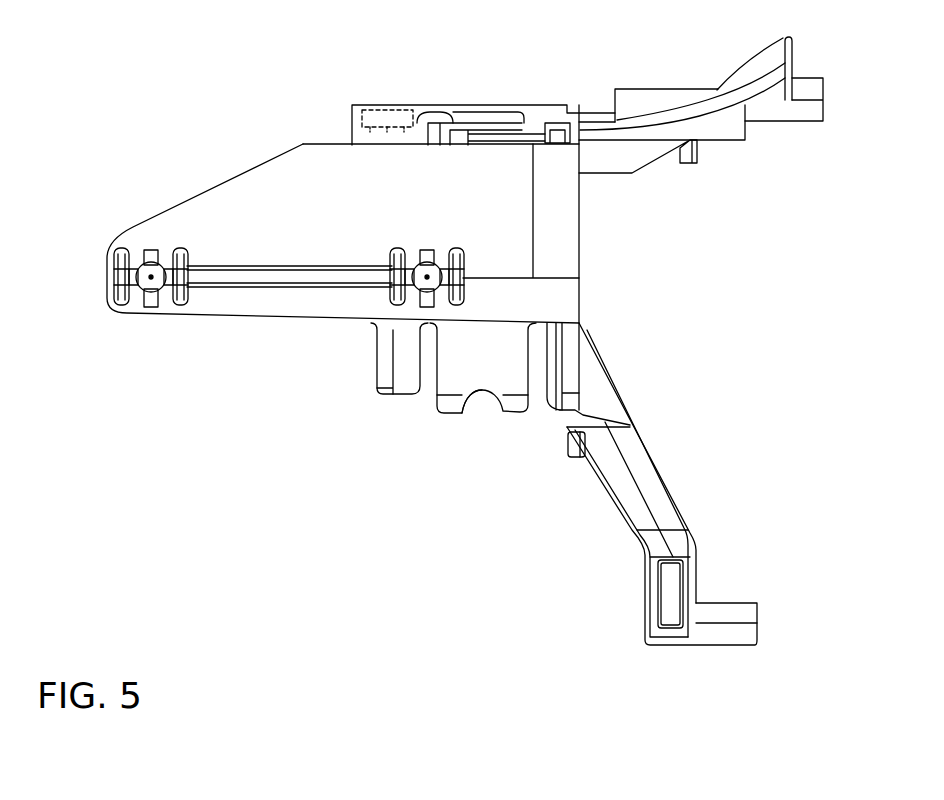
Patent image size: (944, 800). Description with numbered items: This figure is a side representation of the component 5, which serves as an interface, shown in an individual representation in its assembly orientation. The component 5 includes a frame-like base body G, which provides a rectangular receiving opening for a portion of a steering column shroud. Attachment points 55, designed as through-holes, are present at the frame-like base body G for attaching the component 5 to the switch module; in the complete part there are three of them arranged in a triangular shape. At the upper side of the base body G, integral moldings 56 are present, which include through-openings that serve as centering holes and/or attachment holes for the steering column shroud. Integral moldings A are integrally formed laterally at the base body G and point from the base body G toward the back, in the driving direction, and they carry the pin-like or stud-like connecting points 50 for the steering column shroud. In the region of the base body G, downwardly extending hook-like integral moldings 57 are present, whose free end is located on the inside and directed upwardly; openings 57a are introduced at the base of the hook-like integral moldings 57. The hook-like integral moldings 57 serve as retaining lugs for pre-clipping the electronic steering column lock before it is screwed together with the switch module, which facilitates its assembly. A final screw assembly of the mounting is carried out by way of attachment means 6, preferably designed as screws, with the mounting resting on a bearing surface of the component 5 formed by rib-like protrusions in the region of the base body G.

The component 5 is at (233, 113).
The attachment means 6 is at (392, 116).
The connecting points 50 is at (427, 277).
The attachment points 55 is at (757, 624).
The integral moldings 56 is at (645, 107).
The hook-like integral moldings 57 is at (514, 412).
The openings 57a is at (467, 402).
The integral moldings A is at (228, 177).
The frame-like base body G is at (580, 247).